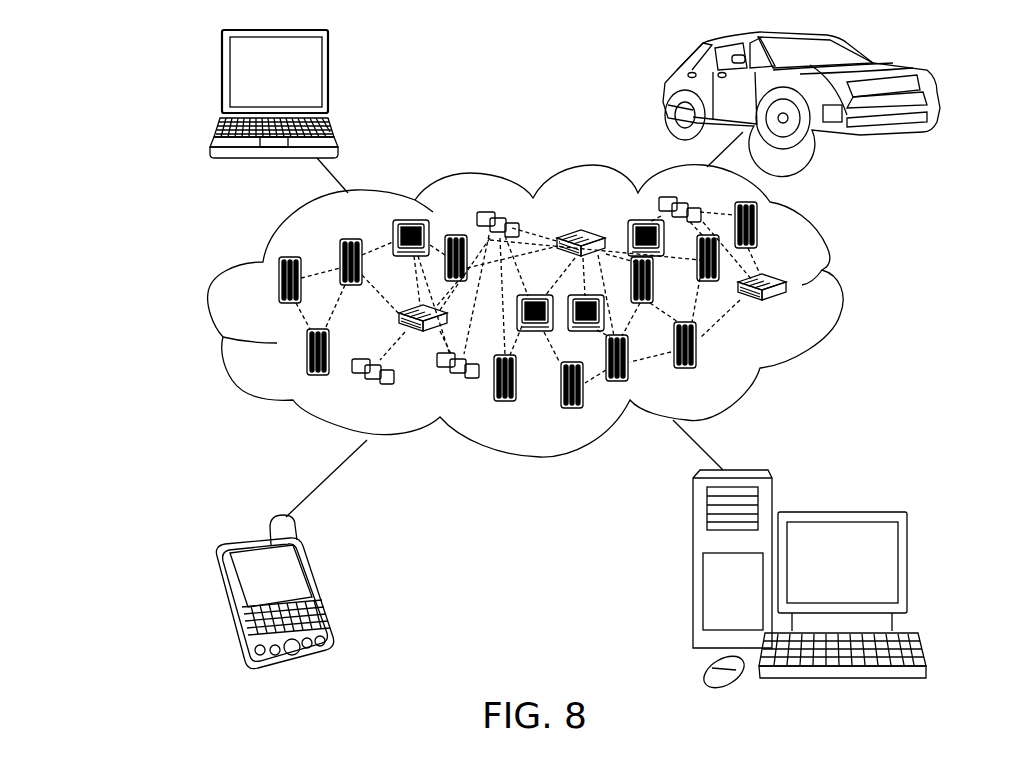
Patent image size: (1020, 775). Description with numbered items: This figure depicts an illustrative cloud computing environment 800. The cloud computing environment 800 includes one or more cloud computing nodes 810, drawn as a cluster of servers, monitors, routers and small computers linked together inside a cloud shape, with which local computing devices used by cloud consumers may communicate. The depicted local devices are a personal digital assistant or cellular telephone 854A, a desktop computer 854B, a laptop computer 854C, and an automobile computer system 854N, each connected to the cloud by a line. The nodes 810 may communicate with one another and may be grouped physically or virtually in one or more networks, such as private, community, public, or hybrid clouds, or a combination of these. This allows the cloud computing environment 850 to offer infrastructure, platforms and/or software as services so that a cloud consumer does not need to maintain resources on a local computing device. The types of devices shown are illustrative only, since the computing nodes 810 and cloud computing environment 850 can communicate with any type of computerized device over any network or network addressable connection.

The cloud computing environment 800 is at (90, 50).
The cloud computing environment 850 is at (847, 285).
The cloud computing nodes 810 is at (803, 315).
The personal digital assistant (PDA) or cellular telephone 854A is at (322, 587).
The desktop computer 854B is at (841, 511).
The laptop computer 854C is at (332, 80).
The automobile computer system 854N is at (670, 93).